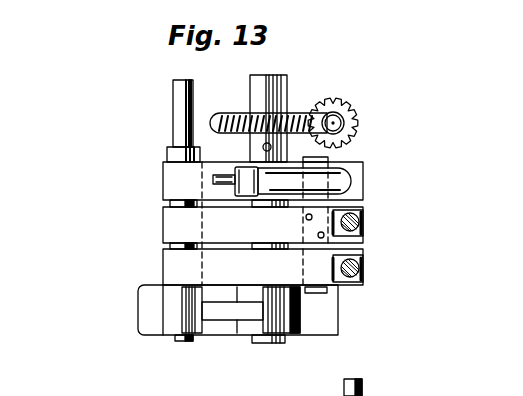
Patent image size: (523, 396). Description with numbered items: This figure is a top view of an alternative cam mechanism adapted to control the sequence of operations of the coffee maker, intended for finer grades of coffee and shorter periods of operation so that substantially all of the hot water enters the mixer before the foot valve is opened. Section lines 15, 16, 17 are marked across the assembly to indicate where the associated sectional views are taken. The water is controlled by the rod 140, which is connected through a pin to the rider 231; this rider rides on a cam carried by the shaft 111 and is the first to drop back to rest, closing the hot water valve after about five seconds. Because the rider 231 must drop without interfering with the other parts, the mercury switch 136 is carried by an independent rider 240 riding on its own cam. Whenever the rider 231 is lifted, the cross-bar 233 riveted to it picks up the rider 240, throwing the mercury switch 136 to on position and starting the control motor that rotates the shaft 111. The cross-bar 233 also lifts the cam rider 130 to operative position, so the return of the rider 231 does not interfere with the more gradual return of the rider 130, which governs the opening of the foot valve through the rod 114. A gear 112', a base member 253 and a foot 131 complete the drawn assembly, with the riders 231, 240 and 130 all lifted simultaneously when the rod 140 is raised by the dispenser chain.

The rack and pinion drive gear 112' is at (317, 109).
The cross-bar 233 is at (330, 160).
The mercury switch 136 is at (345, 180).
The rod 140 is at (358, 228).
The rod 114 is at (364, 268).
The base guide 253 is at (322, 245).
The shaft 111 is at (272, 343).
The lower bracket foot 131 is at (185, 341).
The cam rider 130 is at (163, 268).
The rider 231 is at (163, 227).
The rider 240 is at (163, 178).
The section line 15- 15 is at (108, 199).
The section line 16- 16 is at (112, 244).
The section line 17- 17 is at (112, 285).